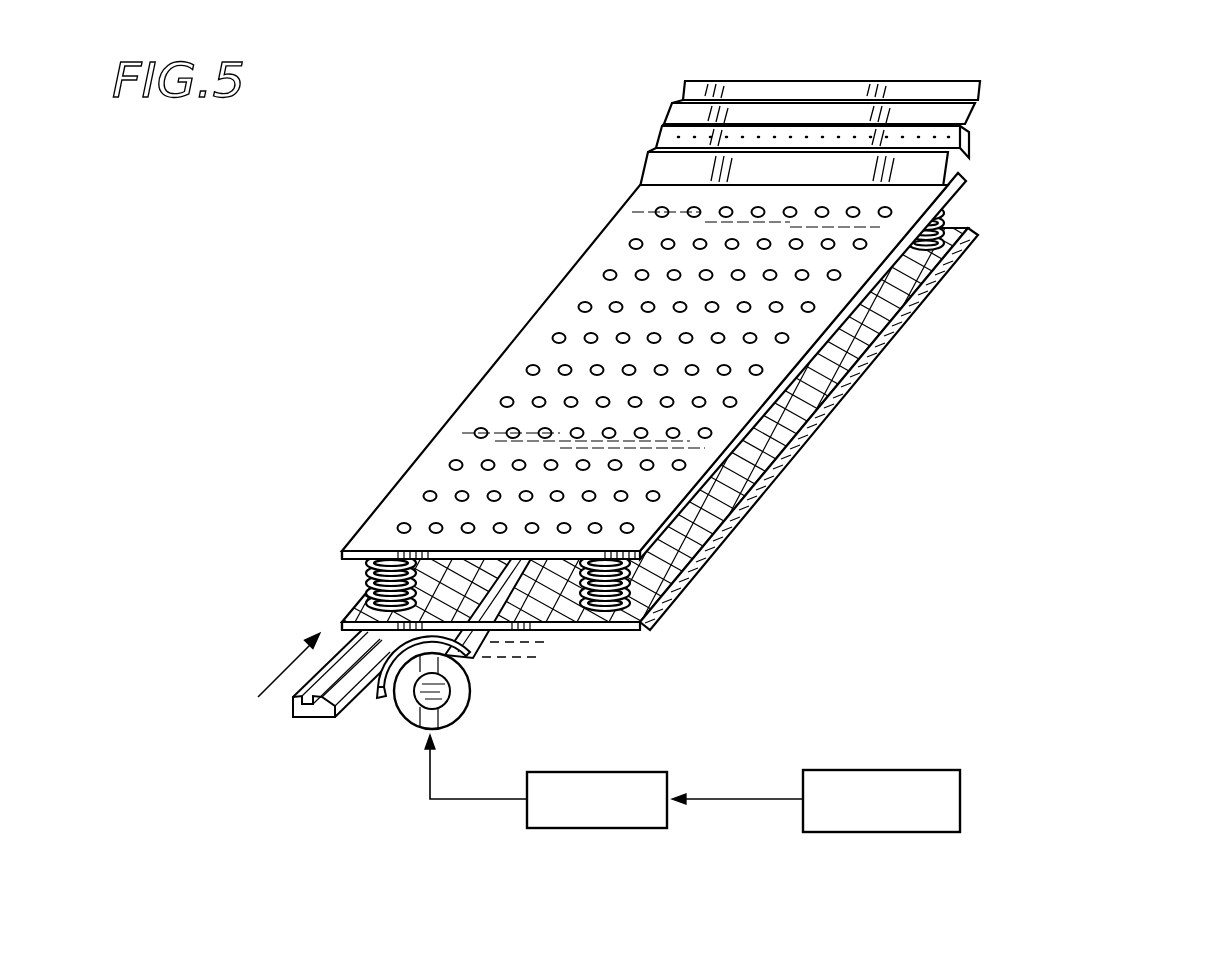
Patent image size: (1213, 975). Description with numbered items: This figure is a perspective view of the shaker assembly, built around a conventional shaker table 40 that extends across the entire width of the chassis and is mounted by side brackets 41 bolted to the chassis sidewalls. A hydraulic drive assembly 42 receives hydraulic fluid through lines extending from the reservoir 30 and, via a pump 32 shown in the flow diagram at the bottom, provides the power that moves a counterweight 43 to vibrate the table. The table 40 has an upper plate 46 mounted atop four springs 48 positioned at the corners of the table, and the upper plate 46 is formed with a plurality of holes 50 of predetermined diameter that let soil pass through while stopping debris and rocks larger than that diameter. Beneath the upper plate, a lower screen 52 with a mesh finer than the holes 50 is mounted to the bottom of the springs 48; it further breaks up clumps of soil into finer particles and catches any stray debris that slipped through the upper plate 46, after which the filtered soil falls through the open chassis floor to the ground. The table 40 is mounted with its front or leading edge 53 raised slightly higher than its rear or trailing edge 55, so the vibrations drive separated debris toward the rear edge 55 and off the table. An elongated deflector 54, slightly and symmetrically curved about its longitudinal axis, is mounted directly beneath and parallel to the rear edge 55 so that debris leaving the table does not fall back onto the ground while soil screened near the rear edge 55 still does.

The reservoir 30 is at (867, 832).
The pump 32 is at (582, 828).
The shaker table 40 is at (488, 333).
The side bracket 41 is at (958, 112).
The hydraulic drive assembly 42 is at (456, 698).
The counterweight 43 is at (381, 692).
The upper plate 46 is at (649, 366).
The springs 48 is at (943, 214).
The holes 50 is at (622, 235).
The lower screen 52 is at (702, 443).
The front edge 53 is at (830, 332).
The elongated deflector 54 is at (292, 700).
The rear edge 55 is at (343, 626).